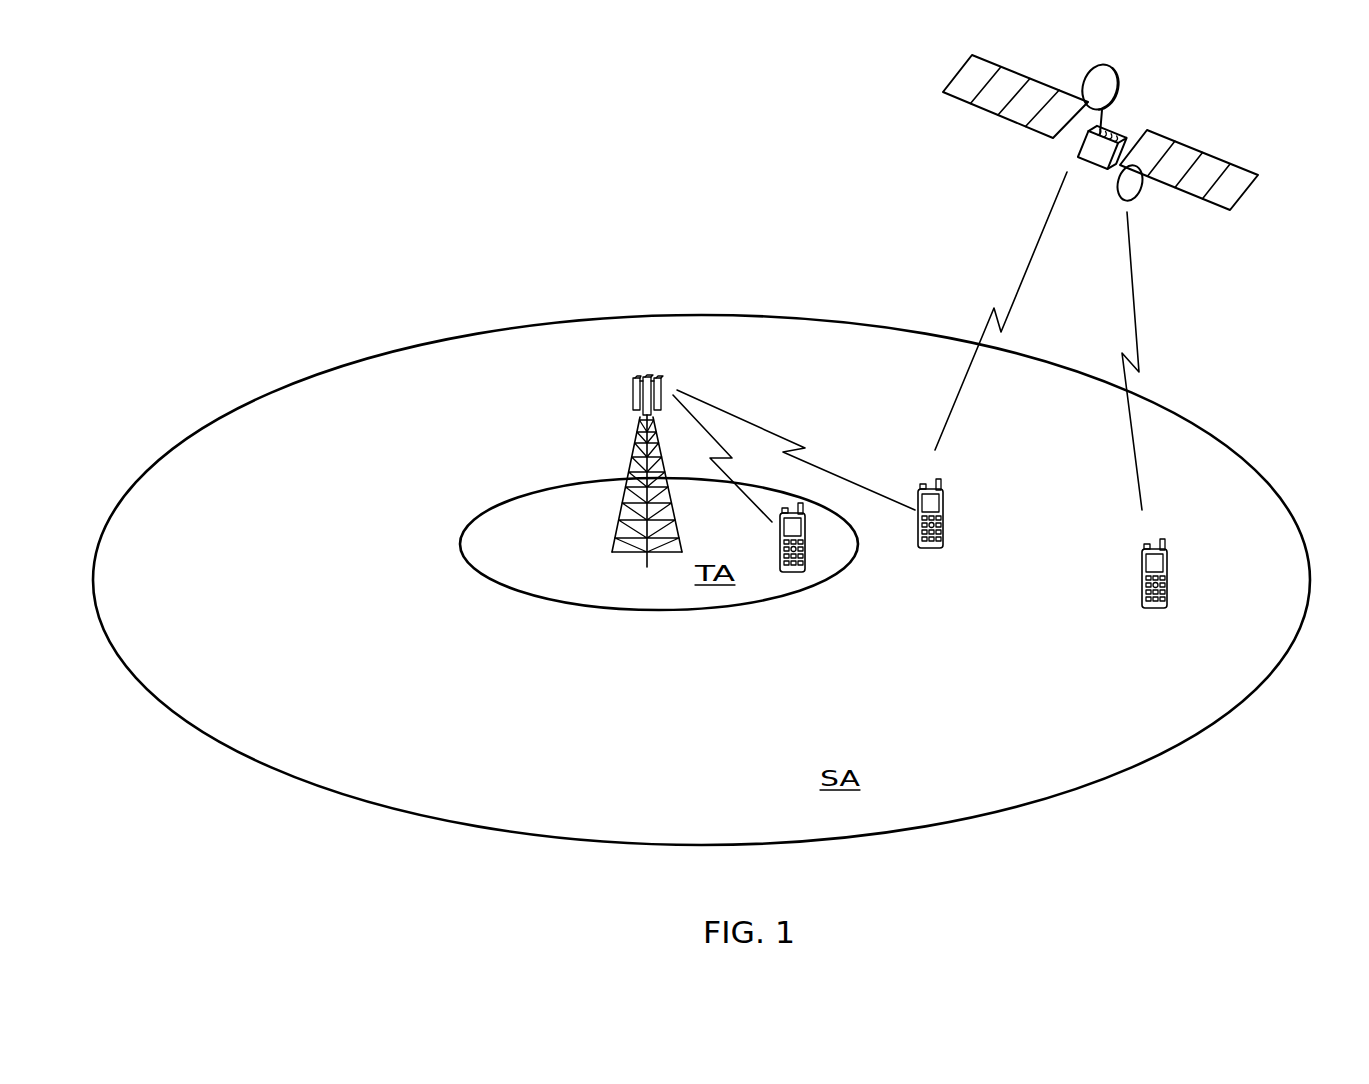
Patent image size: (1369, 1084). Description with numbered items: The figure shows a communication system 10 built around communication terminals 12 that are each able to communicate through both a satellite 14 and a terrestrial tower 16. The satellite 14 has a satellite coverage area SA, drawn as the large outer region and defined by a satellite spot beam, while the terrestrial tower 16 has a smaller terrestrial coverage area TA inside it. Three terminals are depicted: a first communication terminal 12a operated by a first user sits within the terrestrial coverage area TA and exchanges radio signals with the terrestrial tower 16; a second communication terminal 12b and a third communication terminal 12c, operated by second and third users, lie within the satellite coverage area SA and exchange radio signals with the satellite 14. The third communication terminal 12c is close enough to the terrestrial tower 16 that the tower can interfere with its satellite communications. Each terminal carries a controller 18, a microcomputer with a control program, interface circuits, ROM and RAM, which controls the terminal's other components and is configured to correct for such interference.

The communication system 10 is at (397, 298).
The communication terminal 12 is at (973, 584).
The first communication terminal 12a is at (813, 552).
The second communication terminal 12b is at (1135, 600).
The third communication terminal 12c is at (950, 517).
The satellite 14 is at (940, 90).
The terrestrial tower 16 is at (622, 455).
The controller 18 is at (803, 508).